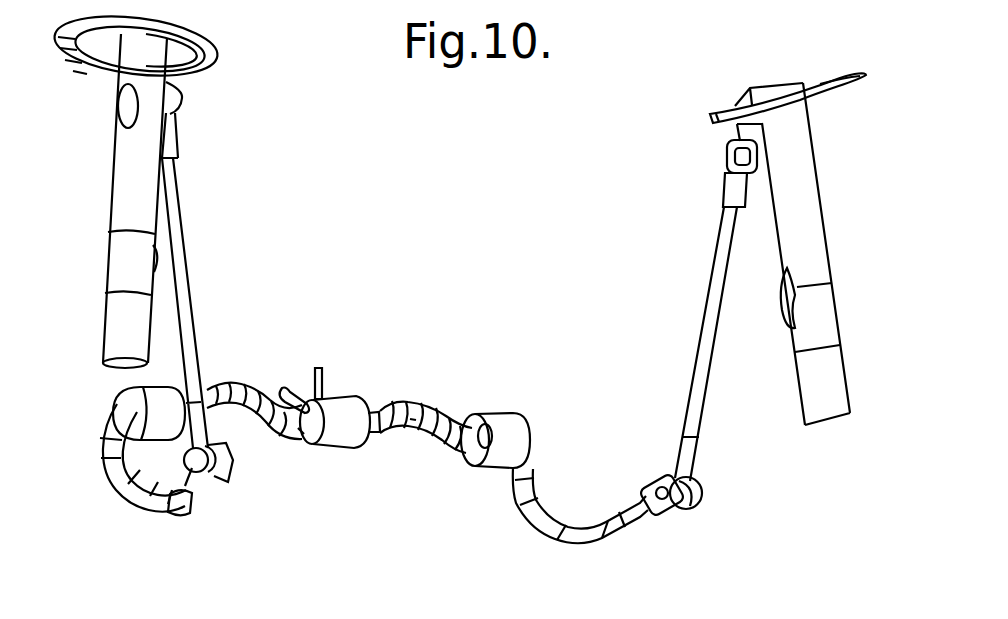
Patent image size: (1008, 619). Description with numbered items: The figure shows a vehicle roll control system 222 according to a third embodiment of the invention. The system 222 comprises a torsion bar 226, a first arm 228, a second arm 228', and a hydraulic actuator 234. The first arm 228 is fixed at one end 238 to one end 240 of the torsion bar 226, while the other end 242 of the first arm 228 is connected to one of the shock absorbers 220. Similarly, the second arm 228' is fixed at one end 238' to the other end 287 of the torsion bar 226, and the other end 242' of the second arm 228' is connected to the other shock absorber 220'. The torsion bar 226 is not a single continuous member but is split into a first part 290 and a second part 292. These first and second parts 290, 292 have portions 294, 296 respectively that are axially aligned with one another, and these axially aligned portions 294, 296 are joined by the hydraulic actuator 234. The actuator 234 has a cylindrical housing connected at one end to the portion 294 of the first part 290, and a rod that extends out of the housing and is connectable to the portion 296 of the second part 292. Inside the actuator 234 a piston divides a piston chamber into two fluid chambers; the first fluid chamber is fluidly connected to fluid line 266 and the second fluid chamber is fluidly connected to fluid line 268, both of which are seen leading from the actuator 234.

The shock absorber 220 is at (128, 188).
The vehicle roll control system 222 is at (432, 344).
The torsion bar 226 is at (412, 424).
The first arm 228 is at (225, 303).
The hydraulic actuator 234 is at (345, 397).
The one end of the first arm 238 is at (128, 462).
The one end of the torsion bar 240 is at (222, 482).
The other end of the first arm 242 is at (217, 120).
The fluid line 266 is at (284, 389).
The fluid line 268 is at (319, 367).
The other end of the torsion bar 287 is at (673, 510).
The first part of the torsion bar 290 is at (243, 384).
The second part of the torsion bar 292 is at (510, 504).
The portion of the first part 294 is at (300, 432).
The portion of the second part 296 is at (382, 411).
The other shock absorber 220' is at (808, 249).
The second arm 228' is at (727, 344).
The one end of the second arm 238' is at (720, 506).
The other end of the second arm 242' is at (704, 165).